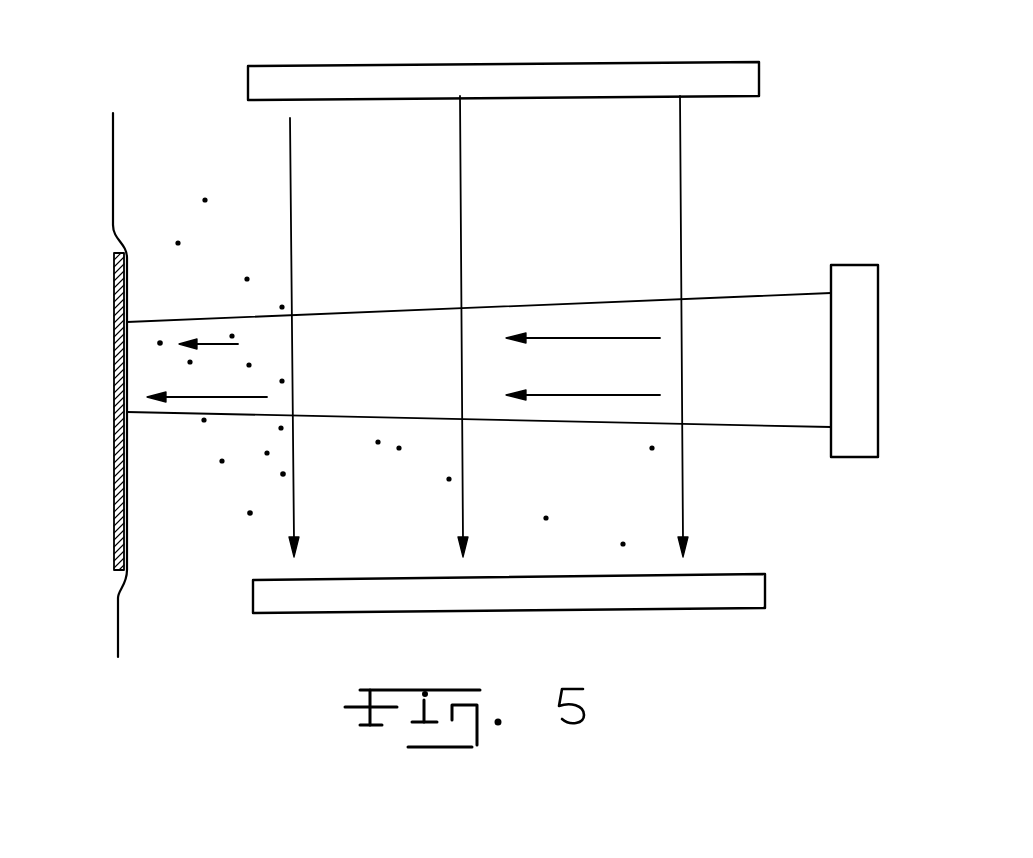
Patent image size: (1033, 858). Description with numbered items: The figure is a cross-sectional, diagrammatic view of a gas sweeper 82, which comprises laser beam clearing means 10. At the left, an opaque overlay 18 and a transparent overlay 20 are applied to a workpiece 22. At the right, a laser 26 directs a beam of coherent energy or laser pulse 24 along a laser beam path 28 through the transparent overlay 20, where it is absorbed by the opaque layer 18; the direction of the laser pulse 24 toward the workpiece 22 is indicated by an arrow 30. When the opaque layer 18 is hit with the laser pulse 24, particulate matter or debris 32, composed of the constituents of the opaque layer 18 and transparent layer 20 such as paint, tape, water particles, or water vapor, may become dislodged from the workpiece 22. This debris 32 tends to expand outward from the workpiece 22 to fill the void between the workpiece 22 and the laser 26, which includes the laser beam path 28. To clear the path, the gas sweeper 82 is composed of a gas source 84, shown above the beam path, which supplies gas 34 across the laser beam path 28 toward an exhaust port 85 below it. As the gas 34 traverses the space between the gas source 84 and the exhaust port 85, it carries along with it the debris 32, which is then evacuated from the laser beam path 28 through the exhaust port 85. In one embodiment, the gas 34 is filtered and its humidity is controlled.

The laser beam clearing means 10 is at (790, 140).
The opaque overlay 18 is at (114, 358).
The transparent overlay 20 is at (114, 244).
The workpiece 22 is at (113, 146).
The laser pulse 24 is at (208, 320).
The laser 26 is at (862, 457).
The laser beam path 28 is at (705, 415).
The arrow 30 is at (208, 398).
The debris 32 is at (205, 200).
The gas 34 is at (293, 236).
The gas sweeper 82 is at (234, 113).
The gas source 84 is at (258, 66).
The exhaust port 85 is at (252, 598).